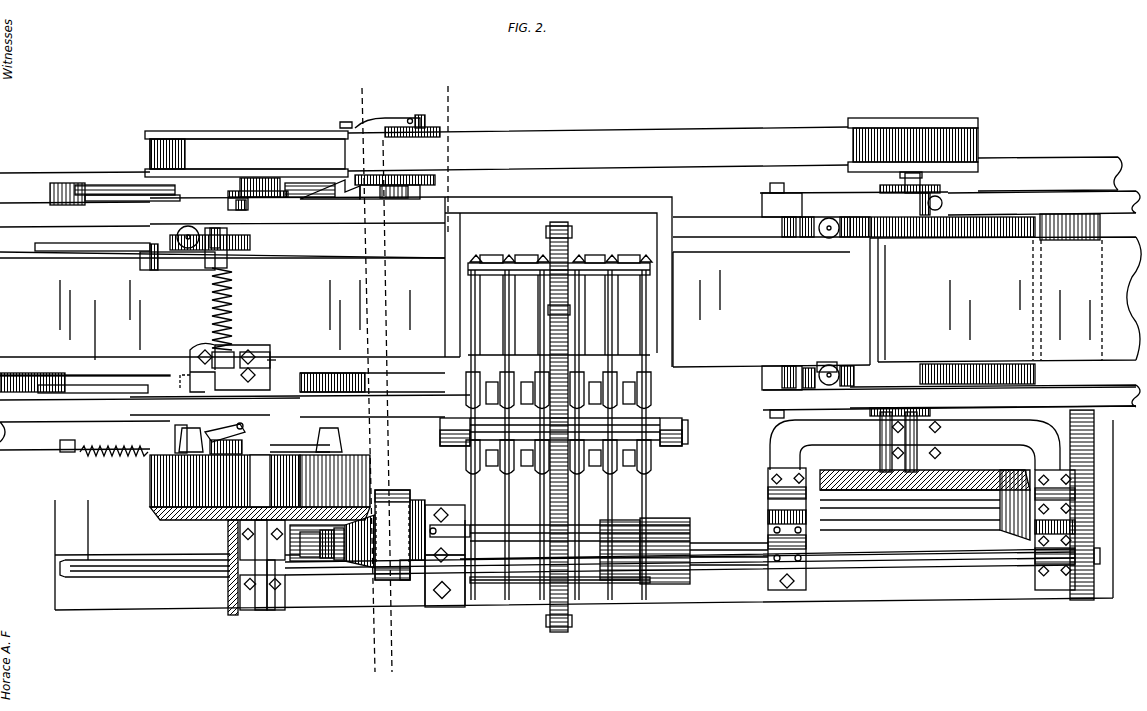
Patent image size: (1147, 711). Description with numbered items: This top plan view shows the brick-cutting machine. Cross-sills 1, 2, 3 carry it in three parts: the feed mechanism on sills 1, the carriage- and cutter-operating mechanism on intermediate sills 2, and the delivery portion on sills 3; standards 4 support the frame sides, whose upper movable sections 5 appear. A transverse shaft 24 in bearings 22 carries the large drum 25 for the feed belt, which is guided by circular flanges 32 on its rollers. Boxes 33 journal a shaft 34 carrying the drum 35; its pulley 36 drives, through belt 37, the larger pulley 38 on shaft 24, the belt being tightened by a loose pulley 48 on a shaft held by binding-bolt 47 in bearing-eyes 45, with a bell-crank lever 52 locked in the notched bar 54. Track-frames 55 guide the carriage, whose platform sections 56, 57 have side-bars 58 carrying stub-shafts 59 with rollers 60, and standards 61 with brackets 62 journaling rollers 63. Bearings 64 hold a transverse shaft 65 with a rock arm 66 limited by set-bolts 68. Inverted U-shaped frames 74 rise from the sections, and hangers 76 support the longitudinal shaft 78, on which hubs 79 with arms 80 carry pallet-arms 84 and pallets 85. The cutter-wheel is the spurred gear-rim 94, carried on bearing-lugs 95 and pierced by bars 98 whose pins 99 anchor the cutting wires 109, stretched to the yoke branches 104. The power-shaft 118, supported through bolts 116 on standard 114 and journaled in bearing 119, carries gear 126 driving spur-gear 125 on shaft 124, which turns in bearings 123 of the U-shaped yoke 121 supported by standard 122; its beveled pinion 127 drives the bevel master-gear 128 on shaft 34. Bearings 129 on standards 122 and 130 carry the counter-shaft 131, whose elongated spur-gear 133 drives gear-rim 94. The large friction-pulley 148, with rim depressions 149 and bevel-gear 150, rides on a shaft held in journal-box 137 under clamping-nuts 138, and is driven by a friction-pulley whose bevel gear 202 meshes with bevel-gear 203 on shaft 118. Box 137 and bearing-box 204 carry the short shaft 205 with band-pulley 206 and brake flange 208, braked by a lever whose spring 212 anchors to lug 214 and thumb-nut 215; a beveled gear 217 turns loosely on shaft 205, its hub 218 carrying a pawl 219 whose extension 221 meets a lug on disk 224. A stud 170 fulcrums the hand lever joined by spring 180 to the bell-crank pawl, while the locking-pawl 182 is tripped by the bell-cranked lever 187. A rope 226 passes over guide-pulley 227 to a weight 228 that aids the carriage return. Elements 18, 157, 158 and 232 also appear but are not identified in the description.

The cross-sills 1 is at (235, 502).
The intermediate sills 2 is at (584, 515).
The sills 3 is at (742, 382).
The standards 4 is at (416, 381).
The upper movable sections 5 is at (308, 443).
The shaft end bearing 18 is at (440, 433).
The bearings 22 is at (280, 192).
The transverse shaft 24 is at (255, 180).
The large drum 25 is at (326, 398).
The circular flanges 32 is at (45, 252).
The boxes 33 is at (920, 188).
The transverse shaft 34 is at (905, 180).
The large drum 35 is at (995, 222).
The pulley 36 is at (918, 120).
The belt 37 is at (735, 159).
The pulley 38 is at (270, 134).
The bearing-eyes 45 is at (426, 118).
The binding-bolt 47 is at (410, 120).
The loose pulley 48 is at (442, 130).
The bell-crank lever 52 is at (375, 182).
The notched locking-bar 54 is at (345, 200).
The track-frames 55 is at (568, 304).
The receiving section 56 is at (406, 275).
The delivery section 57 is at (688, 309).
The side-bars 58 is at (340, 255).
The stub-shafts 59 is at (782, 376).
The rollers 60 is at (248, 202).
The standards 61 is at (178, 258).
The brackets 62 is at (818, 240).
The rollers 63 is at (198, 228).
The bearings 64 is at (212, 263).
The transverse shaft 65 is at (212, 313).
The rock arm 66 is at (260, 358).
The set-bolts 68 is at (200, 372).
The inverted U-shaped frames 74 is at (445, 305).
The hangers 76 is at (445, 446).
The longitudinal shaft 78 is at (683, 427).
The hubs 79 is at (474, 418).
The tangentially-disposed arm 80 is at (490, 465).
The pallet-supporting arm 84 is at (526, 360).
The pallet 85 is at (559, 305).
The spur gear-rim 94 is at (551, 246).
The bearing-lugs 95 is at (546, 232).
The transverse cylindrical bars 98 is at (492, 277).
The pins 99 is at (476, 262).
The branches 104 is at (472, 382).
The wires 109 is at (496, 340).
The open standard 114 is at (255, 610).
The bolts 116 is at (272, 610).
The power-shaft 118 is at (122, 575).
The bearing 119 is at (1030, 563).
The U-shaped yoke 121 is at (915, 445).
The vertical standard 122 is at (810, 592).
The bearings 123 is at (1048, 478).
The shaft 124 is at (882, 500).
The spur-gear 125 is at (1095, 473).
The gear 126 is at (1095, 574).
The beveled pinion 127 is at (998, 505).
The bevel master-gear 128 is at (975, 470).
The bearings 129 is at (803, 535).
The standard 130 is at (450, 606).
The counter-shaft 131 is at (716, 543).
The elongated spur-gear 133 is at (658, 520).
The journal-box 137 is at (230, 540).
The clamping-nuts 138 is at (244, 508).
The large friction pulley 148 is at (152, 481).
The depressions 149 is at (232, 490).
The large bevel-gear 150 is at (165, 515).
The bracket 157 is at (190, 428).
The arm 158 is at (175, 433).
The stud 170 is at (72, 450).
The coiled spring 180 is at (112, 455).
The locking-pawl 182 is at (220, 444).
The bell-cranked lever 187 is at (228, 426).
The small beveled gear 202 is at (232, 522).
The bevel-gear 203 is at (232, 592).
The bearing-box 204 is at (465, 513).
The short longitudinal shaft 205 is at (305, 565).
The band-pulley 206 is at (410, 498).
The annular flange 208 is at (416, 498).
The coiled spring 212 is at (412, 580).
The perforated lug 214 is at (445, 515).
The thumb-nut 215 is at (430, 505).
The beveled gear 217 is at (360, 527).
The hub 218 is at (334, 560).
The pawl 219 is at (378, 490).
The extension 221 is at (1053, 222).
The disk 224 is at (322, 565).
The rope 226 is at (153, 198).
The guide-pulley 227 is at (118, 186).
The weight 228 is at (60, 182).
The plate 232 is at (1005, 299).